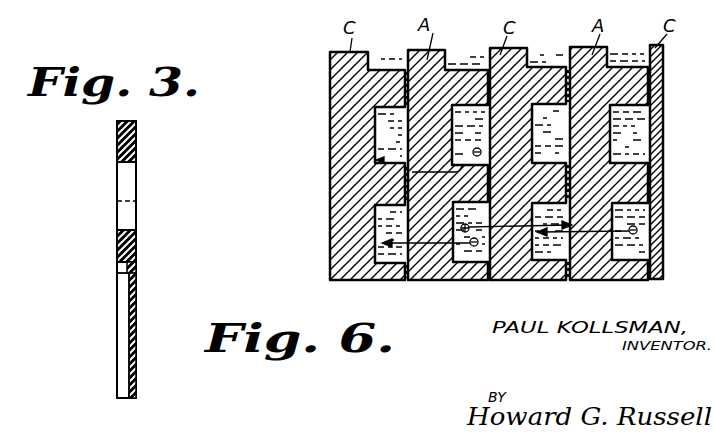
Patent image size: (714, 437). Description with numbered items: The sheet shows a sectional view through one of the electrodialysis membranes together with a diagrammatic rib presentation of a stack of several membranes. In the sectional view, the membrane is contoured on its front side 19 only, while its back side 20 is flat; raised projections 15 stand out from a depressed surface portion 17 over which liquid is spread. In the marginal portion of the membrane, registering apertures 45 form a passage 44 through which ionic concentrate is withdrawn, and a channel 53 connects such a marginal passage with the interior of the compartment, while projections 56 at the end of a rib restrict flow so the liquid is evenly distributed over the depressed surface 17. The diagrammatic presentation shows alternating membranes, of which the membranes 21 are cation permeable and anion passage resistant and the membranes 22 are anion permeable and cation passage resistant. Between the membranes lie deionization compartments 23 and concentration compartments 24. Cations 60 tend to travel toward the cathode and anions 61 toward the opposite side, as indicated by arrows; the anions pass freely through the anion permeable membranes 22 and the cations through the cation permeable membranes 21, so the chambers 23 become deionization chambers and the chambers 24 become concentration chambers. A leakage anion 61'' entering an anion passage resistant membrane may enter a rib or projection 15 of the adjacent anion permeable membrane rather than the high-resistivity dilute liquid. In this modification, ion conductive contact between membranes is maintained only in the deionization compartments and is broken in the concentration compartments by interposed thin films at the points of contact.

In FIG. 3, the projections 15 is at (125, 313).
In FIG. 6, the projections 15 is at (383, 183).
In FIG. 3, the depressed surface portion 17 is at (130, 342).
In FIG. 3, the front side 19 is at (117, 139).
In FIG. 3, the back side 20 is at (136, 137).
In FIG. 6, the cation permeable membranes 21 is at (387, 268).
In FIG. 6, the anion permeable membranes 22 is at (441, 268).
In FIG. 6, the deionization compartments 23 is at (468, 53).
In FIG. 6, the concentration compartments 24 is at (380, 226).
In FIG. 3, the passage 44 is at (138, 214).
In FIG. 3, the apertures 45 is at (126, 176).
In FIG. 3, the channel 53 is at (118, 250).
In FIG. 3, the projections at the end of the rib 56 is at (118, 276).
In FIG. 6, the cations 60 is at (516, 218).
In FIG. 6, the anions 61 is at (511, 234).
In FIG. 6, the hole (double prime) 61'' is at (470, 139).